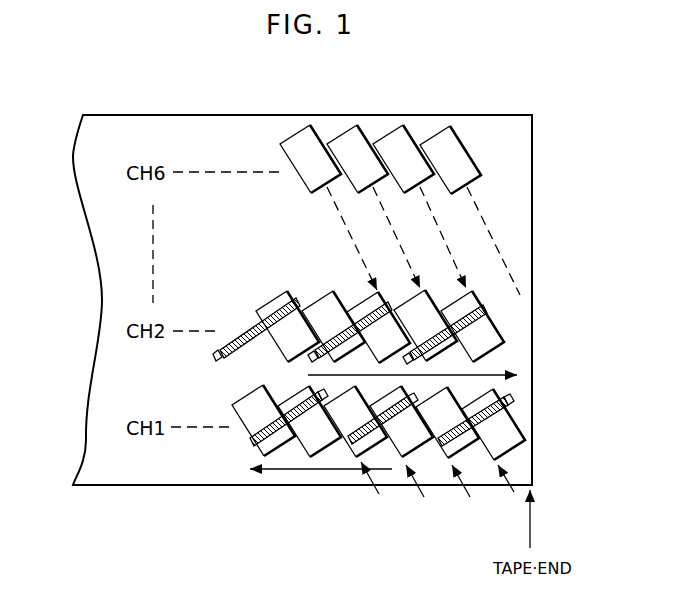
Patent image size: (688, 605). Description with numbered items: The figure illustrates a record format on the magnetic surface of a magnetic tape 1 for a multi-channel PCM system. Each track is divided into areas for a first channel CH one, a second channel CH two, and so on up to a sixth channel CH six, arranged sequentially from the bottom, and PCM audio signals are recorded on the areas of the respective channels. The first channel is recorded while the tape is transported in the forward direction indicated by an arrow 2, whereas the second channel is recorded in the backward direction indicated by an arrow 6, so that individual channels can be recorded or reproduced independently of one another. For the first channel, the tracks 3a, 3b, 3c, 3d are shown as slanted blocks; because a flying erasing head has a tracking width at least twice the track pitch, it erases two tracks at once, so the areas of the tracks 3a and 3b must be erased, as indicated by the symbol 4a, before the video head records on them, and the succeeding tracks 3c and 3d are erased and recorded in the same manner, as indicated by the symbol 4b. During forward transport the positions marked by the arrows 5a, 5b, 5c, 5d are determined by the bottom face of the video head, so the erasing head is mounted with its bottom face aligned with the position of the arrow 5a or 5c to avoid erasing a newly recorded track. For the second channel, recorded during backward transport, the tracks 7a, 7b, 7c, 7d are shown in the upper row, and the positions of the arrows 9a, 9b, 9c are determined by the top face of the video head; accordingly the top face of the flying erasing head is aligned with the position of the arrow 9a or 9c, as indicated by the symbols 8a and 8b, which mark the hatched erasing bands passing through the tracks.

The magnetic tape 1 is at (196, 115).
The arrow 2 is at (296, 472).
The track 3a is at (380, 452).
The track 3b is at (420, 450).
The track 3c is at (465, 447).
The track 3d is at (503, 433).
The erasing head position symbol 4a is at (350, 442).
The erasing head position symbol 4b is at (512, 393).
The arrow 5a is at (379, 494).
The arrow 5b is at (424, 497).
The arrow 5c is at (470, 497).
The arrow 5d is at (510, 480).
The arrow 6 is at (480, 372).
The track 7a is at (452, 304).
The track 7b is at (405, 303).
The track 7c is at (355, 310).
The track 7d is at (296, 302).
The erasing head position symbol 8a is at (490, 302).
The erasing head position symbol 8b is at (330, 340).
The arrow 9a is at (460, 258).
The arrow 9b is at (413, 258).
The arrow 9c is at (364, 258).